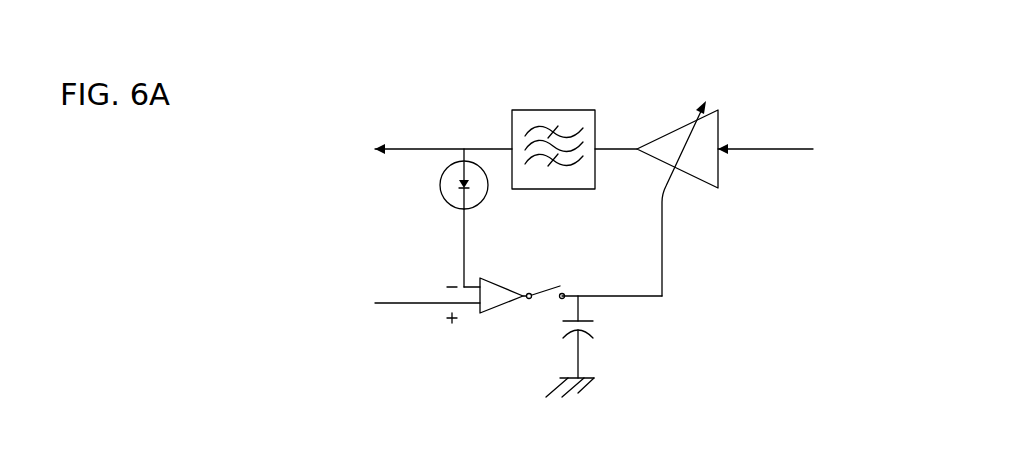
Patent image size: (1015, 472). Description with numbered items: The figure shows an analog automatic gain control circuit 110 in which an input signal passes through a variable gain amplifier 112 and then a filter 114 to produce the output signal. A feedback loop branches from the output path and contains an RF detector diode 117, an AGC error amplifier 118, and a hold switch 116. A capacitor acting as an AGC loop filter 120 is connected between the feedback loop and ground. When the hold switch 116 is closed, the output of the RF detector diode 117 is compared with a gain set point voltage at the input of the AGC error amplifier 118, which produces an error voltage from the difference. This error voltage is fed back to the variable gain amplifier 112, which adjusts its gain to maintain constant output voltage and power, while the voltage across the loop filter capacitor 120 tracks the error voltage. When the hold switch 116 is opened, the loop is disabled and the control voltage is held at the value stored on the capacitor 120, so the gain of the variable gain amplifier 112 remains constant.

The analog automatic gain control circuit 110 is at (437, 73).
The variable gain amplifier 112 is at (776, 111).
The filter 114 is at (553, 125).
The hold switch 116 is at (547, 257).
The RF detector diode 117 is at (440, 181).
The AGC error amplifier 118 is at (490, 302).
The AGC loop filter capacitor 120 is at (602, 346).